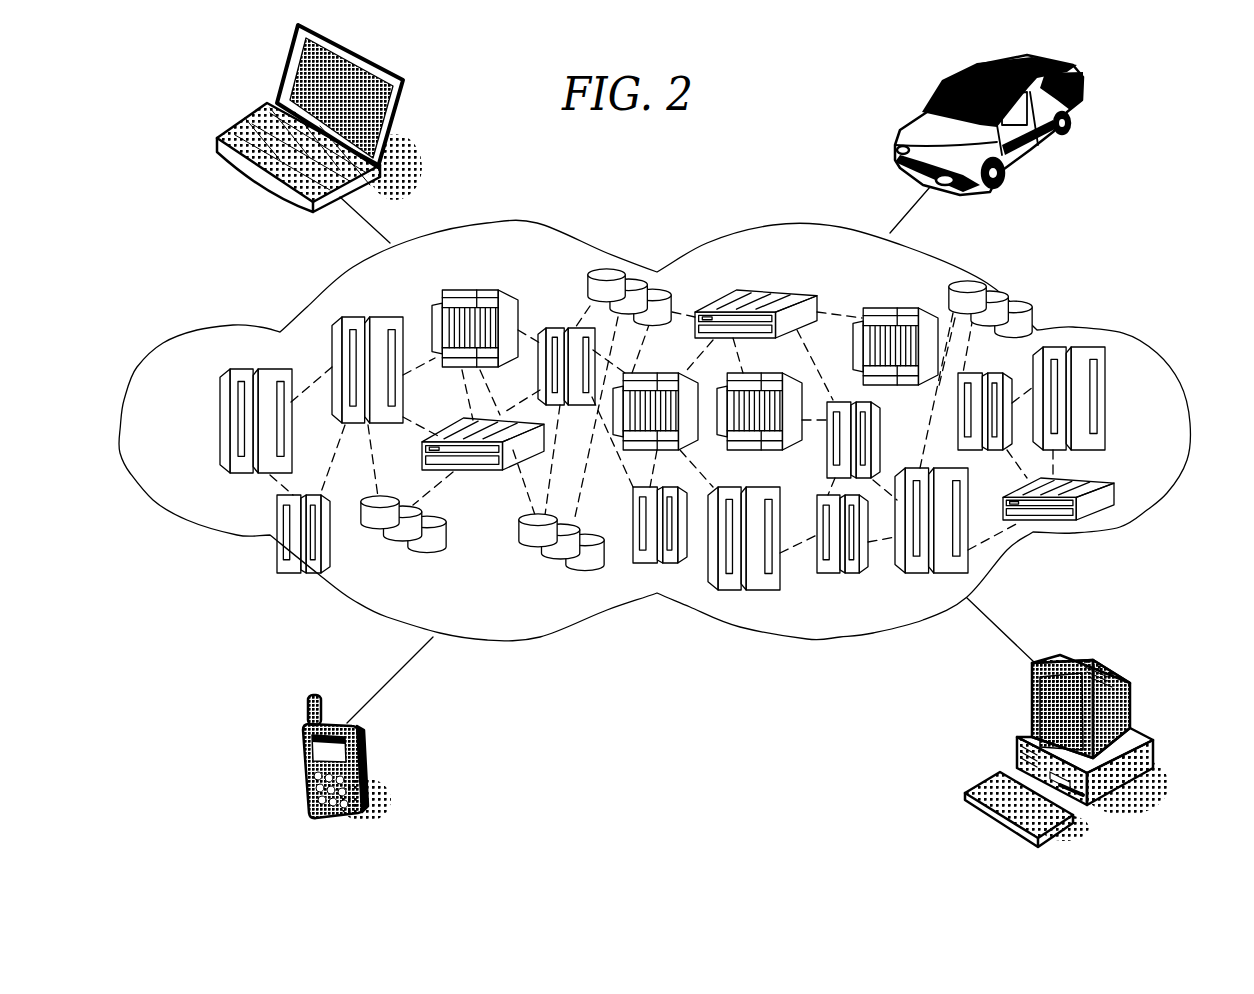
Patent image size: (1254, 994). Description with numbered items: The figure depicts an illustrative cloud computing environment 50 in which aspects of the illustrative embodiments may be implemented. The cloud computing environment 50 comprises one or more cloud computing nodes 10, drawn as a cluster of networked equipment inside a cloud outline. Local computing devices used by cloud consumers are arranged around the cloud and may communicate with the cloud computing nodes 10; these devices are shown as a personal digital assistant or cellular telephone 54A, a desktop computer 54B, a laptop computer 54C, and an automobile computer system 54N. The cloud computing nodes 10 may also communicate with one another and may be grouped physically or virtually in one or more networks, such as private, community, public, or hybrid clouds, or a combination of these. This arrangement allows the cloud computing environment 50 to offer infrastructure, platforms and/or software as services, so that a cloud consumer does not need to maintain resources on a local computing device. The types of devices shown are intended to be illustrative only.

The cloud computing environment 50 is at (1138, 345).
The cloud computing nodes 10 is at (1093, 513).
The personal digital assistant or cellular telephone 54A is at (367, 738).
The desktop computer 54B is at (1020, 731).
The laptop computer 54C is at (255, 113).
The automobile computer system 54N is at (913, 123).